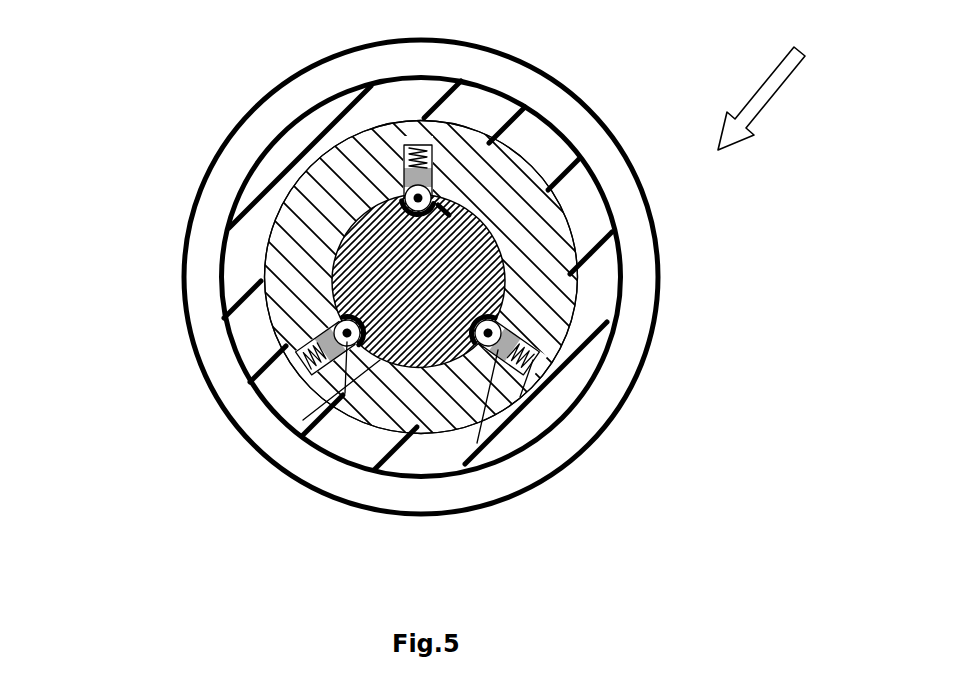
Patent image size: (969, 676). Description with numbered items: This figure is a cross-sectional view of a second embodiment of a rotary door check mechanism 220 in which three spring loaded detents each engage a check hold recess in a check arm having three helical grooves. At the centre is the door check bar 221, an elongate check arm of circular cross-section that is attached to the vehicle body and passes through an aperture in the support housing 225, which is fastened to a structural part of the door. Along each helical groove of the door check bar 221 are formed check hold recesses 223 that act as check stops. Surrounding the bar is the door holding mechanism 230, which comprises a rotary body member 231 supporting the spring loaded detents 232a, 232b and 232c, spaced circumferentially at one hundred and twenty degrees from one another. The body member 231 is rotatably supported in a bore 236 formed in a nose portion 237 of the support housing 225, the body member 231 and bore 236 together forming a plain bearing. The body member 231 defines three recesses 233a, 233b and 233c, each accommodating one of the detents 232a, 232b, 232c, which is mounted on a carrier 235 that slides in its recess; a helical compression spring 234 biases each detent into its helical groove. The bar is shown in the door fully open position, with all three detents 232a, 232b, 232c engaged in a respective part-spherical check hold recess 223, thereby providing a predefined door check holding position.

The rotary door check mechanism 220 is at (780, 86).
The door check bar 221 is at (505, 270).
The check hold recesses 223 is at (450, 210).
The support housing 225 is at (590, 110).
The door holding mechanism 230 is at (262, 352).
The body member 231 is at (265, 262).
The detent 232a is at (204, 339).
The detent 232b is at (417, 197).
The detent 232c is at (490, 333).
The recess 233a is at (223, 389).
The recess 233b is at (346, 95).
The recess 233c is at (533, 357).
The helical compression spring 234 is at (170, 455).
The carrier 235 is at (403, 177).
The bore 236 is at (439, 230).
The nose portion 237 is at (590, 177).